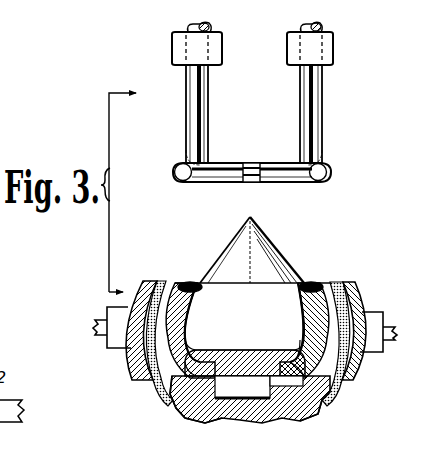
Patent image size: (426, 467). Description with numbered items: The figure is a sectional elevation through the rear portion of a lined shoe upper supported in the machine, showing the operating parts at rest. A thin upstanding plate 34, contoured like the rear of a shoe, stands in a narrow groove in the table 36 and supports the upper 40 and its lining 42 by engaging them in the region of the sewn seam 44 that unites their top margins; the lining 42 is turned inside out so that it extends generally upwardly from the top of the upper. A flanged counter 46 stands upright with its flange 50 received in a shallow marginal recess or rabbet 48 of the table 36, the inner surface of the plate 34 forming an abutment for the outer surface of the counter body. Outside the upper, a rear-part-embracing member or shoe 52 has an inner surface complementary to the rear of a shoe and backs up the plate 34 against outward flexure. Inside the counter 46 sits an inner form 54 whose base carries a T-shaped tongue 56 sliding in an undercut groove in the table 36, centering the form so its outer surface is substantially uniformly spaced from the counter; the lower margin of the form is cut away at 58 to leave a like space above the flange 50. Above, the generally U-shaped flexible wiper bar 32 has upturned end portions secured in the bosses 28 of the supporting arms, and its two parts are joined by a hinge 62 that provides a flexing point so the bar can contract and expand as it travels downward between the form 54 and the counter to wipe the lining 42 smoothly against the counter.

The bosses 28 is at (172, 46).
The wiper bar 32 is at (289, 182).
The hinge 62 is at (255, 163).
The lining 42 is at (265, 251).
The sewn seam 44 is at (186, 284).
The rear-part-embracing member or shoe 52 is at (364, 293).
The upper 40 is at (158, 409).
The inner form 54 is at (245, 316).
The counter 46 is at (184, 333).
The cut-away portion of the form 58 is at (188, 370).
The flange of the counter 50 is at (297, 358).
The marginal recess or rabbet 48 is at (296, 372).
The T-shaped tongue 56 is at (249, 415).
The upstanding plate 34 is at (185, 413).
The table 36 is at (195, 424).